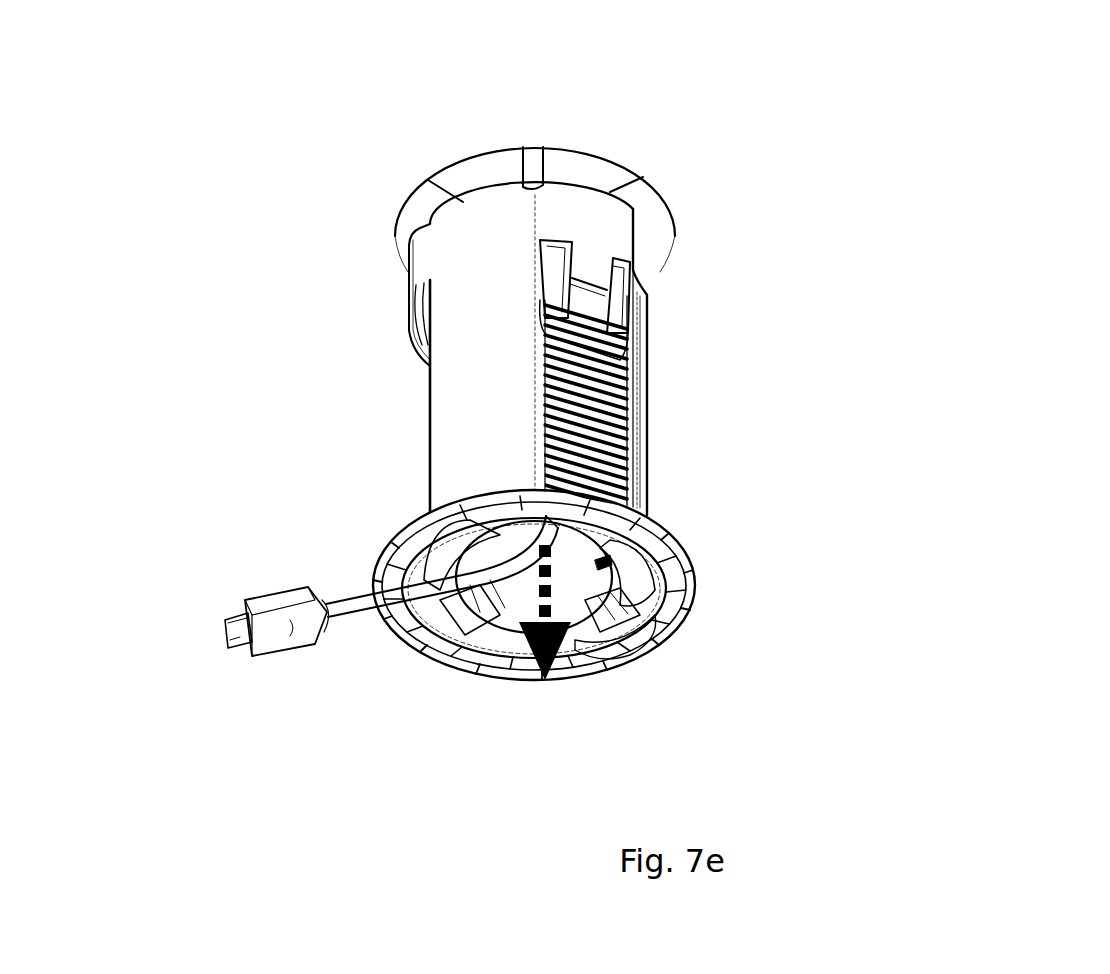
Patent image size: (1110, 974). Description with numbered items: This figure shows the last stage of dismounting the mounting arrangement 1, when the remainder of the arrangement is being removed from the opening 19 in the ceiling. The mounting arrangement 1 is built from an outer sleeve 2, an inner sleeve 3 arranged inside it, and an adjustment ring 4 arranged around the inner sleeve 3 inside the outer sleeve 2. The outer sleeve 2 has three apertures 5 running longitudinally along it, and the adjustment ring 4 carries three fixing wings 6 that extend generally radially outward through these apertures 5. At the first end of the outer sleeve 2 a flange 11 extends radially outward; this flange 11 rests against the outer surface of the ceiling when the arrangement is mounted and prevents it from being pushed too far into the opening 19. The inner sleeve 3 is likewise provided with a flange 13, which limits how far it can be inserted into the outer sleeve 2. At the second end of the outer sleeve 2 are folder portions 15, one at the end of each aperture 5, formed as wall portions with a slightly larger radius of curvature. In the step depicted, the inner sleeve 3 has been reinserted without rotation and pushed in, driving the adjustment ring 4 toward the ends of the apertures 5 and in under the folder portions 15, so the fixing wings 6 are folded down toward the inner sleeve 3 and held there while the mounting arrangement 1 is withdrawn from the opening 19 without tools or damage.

The mounting arrangement 1 is at (258, 180).
The outer sleeve 2 is at (455, 432).
The inner sleeve 3 is at (625, 425).
The adjustment ring 4 is at (632, 248).
The apertures 5 is at (630, 378).
The fixing wings 6 is at (630, 322).
The flange 11 is at (432, 655).
The flange 13 is at (640, 648).
The folder portions 15 is at (623, 225).
The opening 19 is at (582, 167).